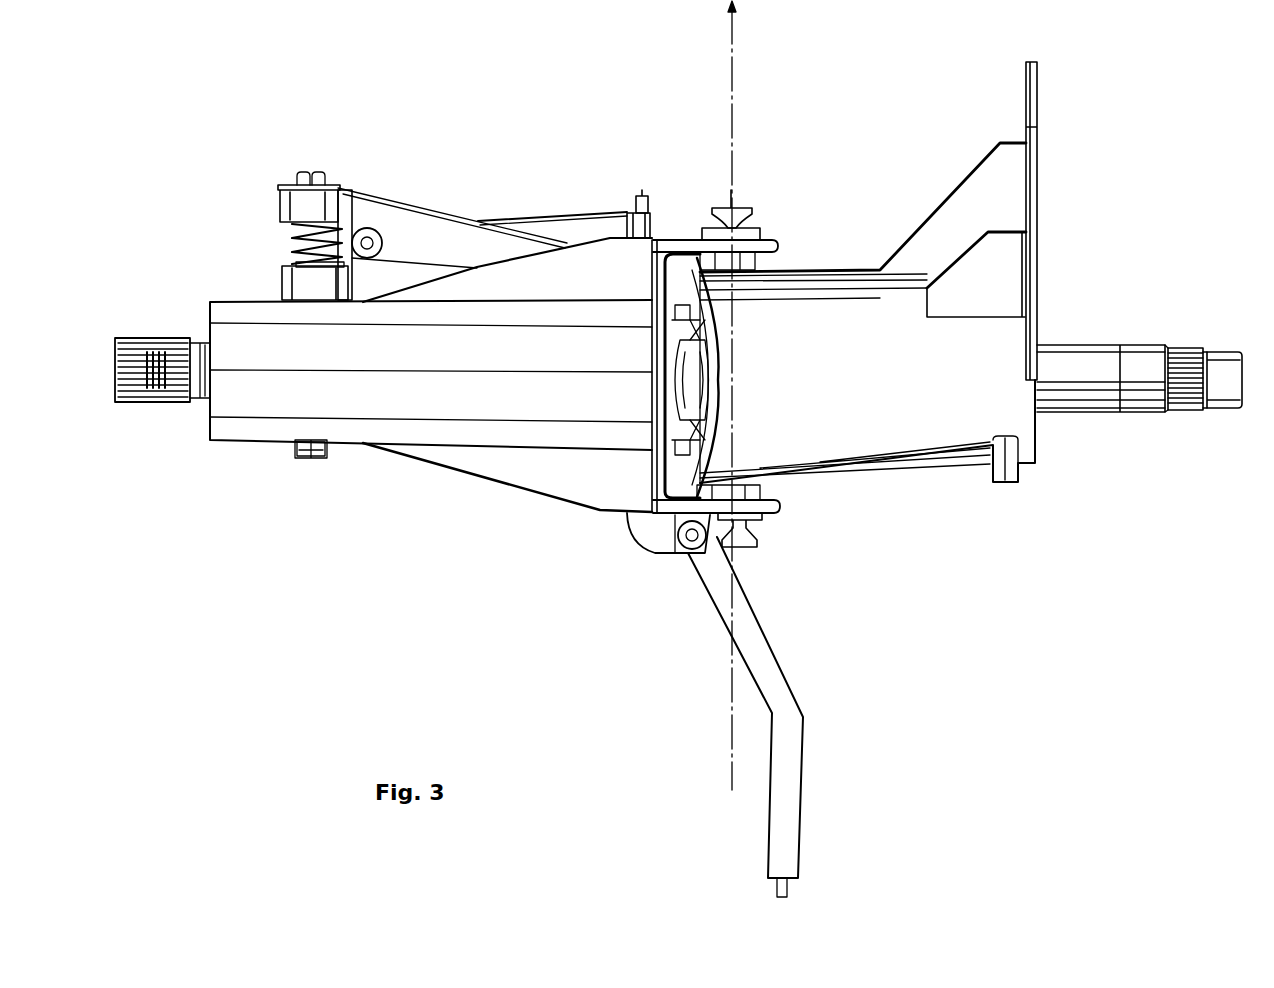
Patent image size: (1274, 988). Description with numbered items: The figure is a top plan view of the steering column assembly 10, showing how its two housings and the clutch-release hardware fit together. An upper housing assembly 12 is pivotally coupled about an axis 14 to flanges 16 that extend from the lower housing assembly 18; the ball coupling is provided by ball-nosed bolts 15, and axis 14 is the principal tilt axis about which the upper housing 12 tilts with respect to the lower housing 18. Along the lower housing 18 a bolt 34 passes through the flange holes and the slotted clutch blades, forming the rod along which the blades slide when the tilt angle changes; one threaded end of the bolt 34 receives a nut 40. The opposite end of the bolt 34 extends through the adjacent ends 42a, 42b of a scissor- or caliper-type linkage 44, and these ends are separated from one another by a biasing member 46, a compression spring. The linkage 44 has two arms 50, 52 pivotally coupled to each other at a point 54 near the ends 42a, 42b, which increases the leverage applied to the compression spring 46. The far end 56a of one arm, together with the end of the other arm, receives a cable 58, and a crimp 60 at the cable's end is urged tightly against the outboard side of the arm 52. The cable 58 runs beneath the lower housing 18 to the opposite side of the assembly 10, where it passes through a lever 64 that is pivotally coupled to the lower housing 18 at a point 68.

The steering column assembly 10 is at (465, 604).
The upper housing assembly 12 is at (919, 452).
The axis 14 is at (734, 42).
The ball-nosed bolts 15 is at (762, 546).
The flanges 16 is at (750, 235).
The lower housing assembly 18 is at (374, 456).
The bolt 34 is at (300, 262).
The nut 40 is at (322, 452).
The end of linkage 42a is at (280, 204).
The end of linkage 42b is at (296, 282).
The linkage 44 is at (470, 205).
The biasing member 46 is at (290, 232).
The arm 50 is at (425, 226).
The arm 52 is at (540, 221).
The pivot point 54 is at (371, 230).
The end of arm 56a is at (662, 242).
The cable 58 is at (645, 196).
The crimp 60 is at (633, 222).
The lever 64 is at (790, 713).
The pivot point 68 is at (672, 556).